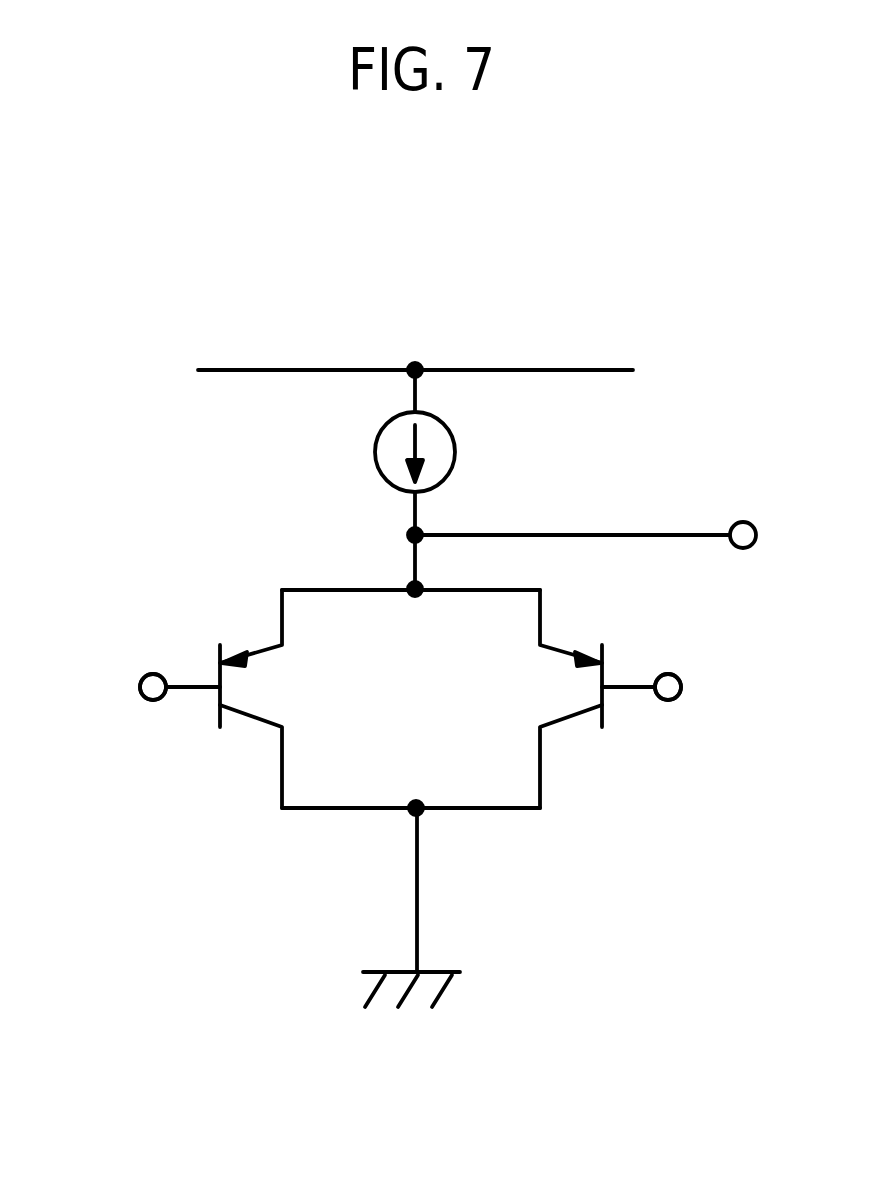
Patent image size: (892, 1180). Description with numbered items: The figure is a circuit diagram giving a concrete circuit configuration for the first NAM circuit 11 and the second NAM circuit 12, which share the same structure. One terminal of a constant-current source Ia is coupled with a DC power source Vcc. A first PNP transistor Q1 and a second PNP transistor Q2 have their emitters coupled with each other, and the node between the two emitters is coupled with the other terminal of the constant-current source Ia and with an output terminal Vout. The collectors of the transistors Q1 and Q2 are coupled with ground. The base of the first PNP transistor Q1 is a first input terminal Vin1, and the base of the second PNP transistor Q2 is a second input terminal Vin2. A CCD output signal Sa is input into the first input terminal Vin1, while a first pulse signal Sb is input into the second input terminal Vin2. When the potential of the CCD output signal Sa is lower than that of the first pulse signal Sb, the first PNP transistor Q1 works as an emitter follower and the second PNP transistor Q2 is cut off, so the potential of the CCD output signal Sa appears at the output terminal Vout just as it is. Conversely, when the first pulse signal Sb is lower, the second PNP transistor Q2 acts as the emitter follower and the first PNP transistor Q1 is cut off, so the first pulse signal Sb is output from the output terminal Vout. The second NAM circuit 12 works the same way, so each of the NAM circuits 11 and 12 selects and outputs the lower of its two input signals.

The first NAM circuit 11 is at (445, 637).
The second NAM circuit 12 is at (372, 365).
The DC power source Vcc is at (372, 365).
The constant-current source Ia is at (451, 483).
The output terminal Vout is at (598, 510).
The first PNP transistor Q1 is at (260, 699).
The second PNP transistor Q2 is at (556, 699).
The CCD output signal Sa is at (147, 684).
The first pulse signal Sb is at (708, 685).
The first input terminal Vin1 is at (151, 659).
The second input terminal Vin2 is at (667, 658).